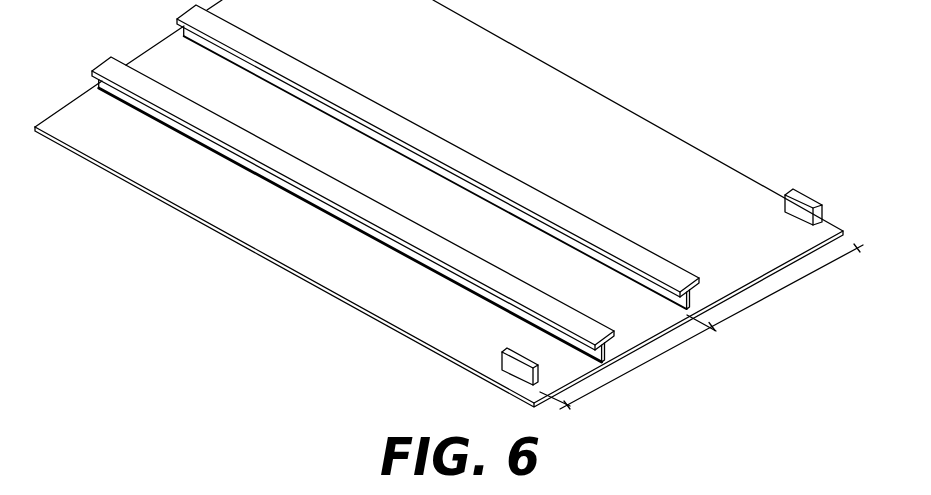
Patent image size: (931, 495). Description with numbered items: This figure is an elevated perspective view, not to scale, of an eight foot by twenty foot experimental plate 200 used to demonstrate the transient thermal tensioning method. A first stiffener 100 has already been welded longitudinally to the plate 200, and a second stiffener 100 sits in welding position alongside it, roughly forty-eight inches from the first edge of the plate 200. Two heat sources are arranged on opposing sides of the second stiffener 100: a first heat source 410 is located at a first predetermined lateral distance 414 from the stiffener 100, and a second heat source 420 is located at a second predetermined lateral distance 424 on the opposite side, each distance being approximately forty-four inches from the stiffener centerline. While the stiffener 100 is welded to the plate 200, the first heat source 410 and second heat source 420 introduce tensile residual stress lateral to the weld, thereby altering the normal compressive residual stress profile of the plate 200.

The stiffener 100 is at (177, 19).
The plate 200 is at (153, 194).
The first heat source 410 is at (500, 368).
The second heat source 420 is at (810, 196).
The first predetermined lateral distance 414 is at (630, 366).
The second predetermined lateral distance 424 is at (772, 291).